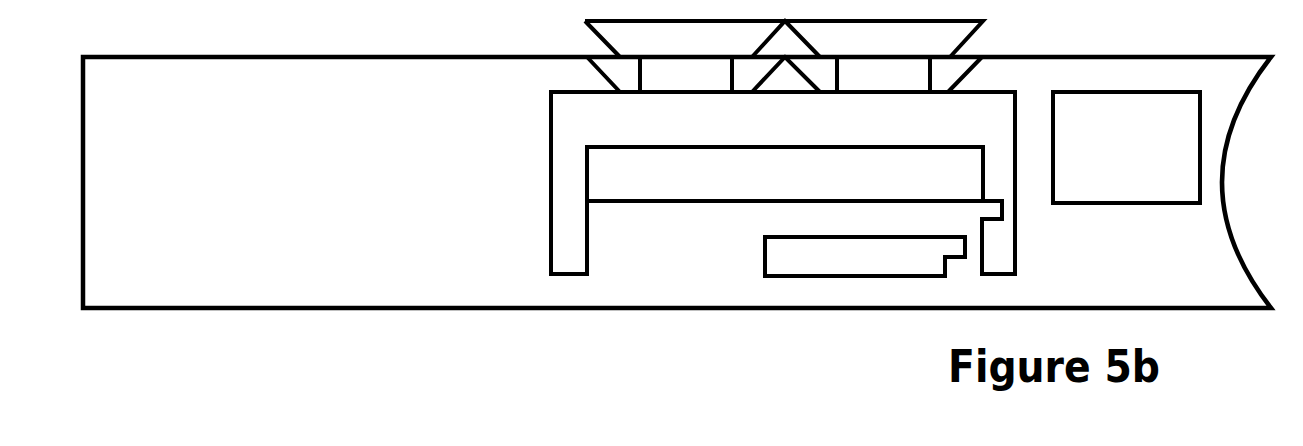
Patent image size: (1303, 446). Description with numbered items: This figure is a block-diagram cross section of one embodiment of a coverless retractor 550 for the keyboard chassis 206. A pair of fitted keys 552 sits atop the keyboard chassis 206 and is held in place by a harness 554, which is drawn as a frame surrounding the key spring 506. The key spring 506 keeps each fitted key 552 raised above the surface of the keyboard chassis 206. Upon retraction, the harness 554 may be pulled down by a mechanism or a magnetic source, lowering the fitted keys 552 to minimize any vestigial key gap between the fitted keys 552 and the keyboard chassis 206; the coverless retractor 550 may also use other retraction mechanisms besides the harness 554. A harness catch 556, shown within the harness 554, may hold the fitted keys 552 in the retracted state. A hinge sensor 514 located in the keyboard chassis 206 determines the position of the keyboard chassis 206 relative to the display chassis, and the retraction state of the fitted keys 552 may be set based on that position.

The coverless retractor 550 is at (1068, 351).
The keyboard chassis 206 is at (432, 297).
The fitted keys 552 is at (939, 54).
The harness 554 is at (876, 136).
The key spring 506 is at (897, 187).
The harness catch 556 is at (928, 271).
The hinge sensor 514 is at (1148, 176).